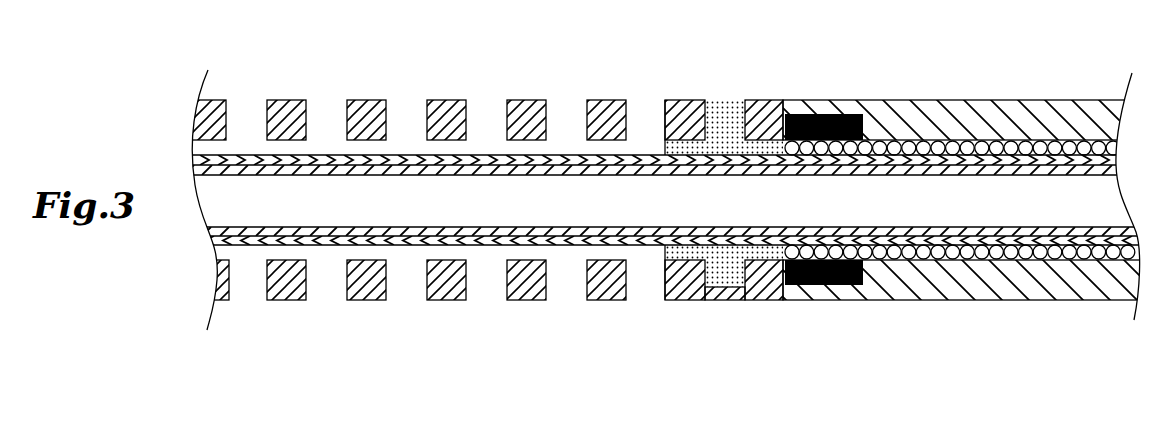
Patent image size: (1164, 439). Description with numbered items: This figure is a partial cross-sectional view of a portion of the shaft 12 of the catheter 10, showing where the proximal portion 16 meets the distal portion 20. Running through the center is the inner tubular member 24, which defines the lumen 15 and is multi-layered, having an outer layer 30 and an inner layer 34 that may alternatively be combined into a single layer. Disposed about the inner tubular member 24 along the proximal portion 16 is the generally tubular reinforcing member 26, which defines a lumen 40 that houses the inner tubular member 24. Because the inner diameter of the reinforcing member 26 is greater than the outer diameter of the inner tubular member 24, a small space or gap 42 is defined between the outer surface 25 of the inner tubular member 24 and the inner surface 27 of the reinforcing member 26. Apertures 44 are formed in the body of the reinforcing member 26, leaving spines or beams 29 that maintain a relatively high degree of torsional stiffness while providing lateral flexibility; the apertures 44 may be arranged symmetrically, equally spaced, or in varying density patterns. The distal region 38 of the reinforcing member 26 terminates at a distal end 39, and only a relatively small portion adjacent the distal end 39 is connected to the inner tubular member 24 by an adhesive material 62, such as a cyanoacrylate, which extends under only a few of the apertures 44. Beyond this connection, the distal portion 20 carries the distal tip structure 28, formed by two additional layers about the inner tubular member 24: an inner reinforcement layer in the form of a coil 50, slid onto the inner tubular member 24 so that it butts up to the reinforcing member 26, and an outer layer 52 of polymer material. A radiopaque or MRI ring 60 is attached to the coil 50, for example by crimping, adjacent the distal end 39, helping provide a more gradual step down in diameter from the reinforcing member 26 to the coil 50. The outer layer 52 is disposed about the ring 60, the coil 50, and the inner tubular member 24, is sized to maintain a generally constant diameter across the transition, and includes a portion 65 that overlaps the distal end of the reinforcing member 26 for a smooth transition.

The catheter 10 is at (629, 74).
The shaft 12 is at (348, 80).
The lumen 15 is at (343, 212).
The proximal portion 16 is at (321, 320).
The distal portion 20 is at (1002, 312).
The inner tubular member 24 is at (556, 145).
The outer surface 25 is at (476, 155).
The reinforcing member 26 is at (282, 88).
The inner surface 27 is at (348, 138).
The distal tip structure 28 is at (915, 82).
The spines or beams 29 is at (622, 100).
The outer layer 30 is at (638, 157).
The inner layer 34 is at (641, 167).
The distal region 38 is at (523, 313).
The distal end 39 is at (782, 300).
The lumen 40 is at (370, 252).
The space or gap 42 is at (367, 147).
The apertures 44 is at (642, 292).
The inner layer (coil) 50 is at (1048, 147).
The outer layer 52 is at (985, 113).
The ring 60 is at (822, 117).
The adhesive material 62 is at (735, 117).
The portion 65 is at (733, 292).